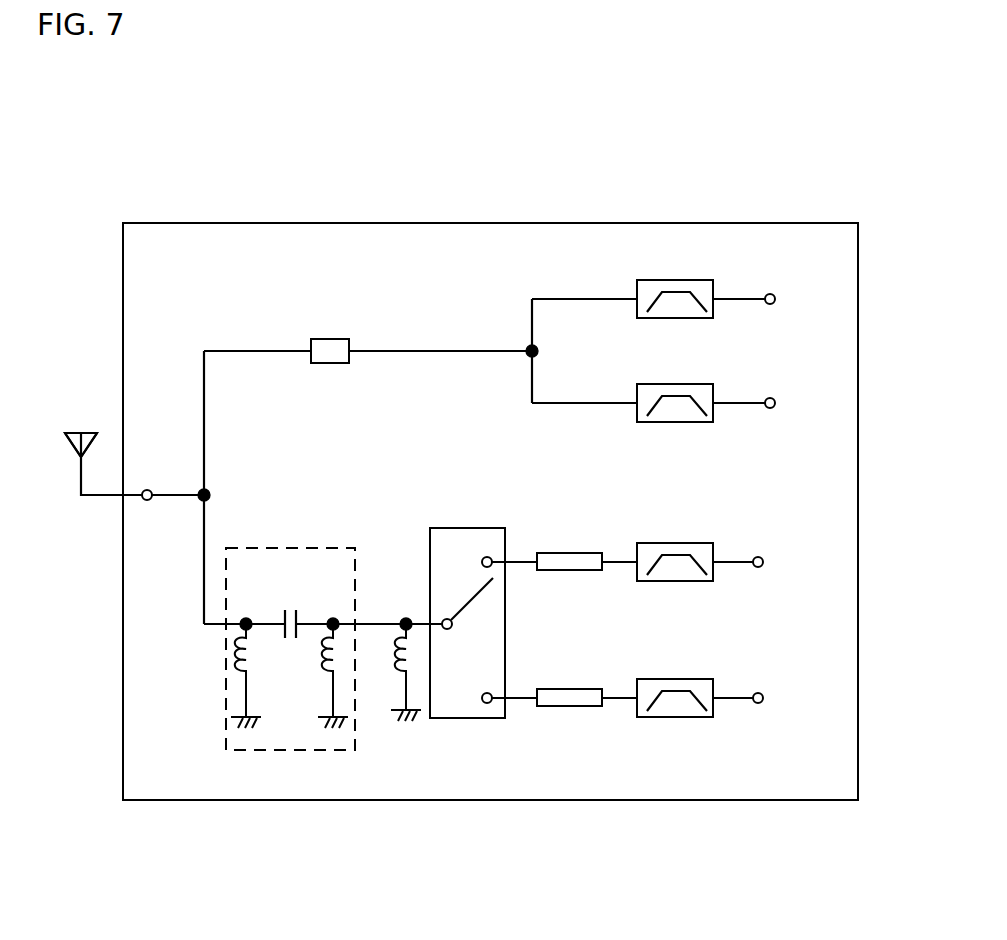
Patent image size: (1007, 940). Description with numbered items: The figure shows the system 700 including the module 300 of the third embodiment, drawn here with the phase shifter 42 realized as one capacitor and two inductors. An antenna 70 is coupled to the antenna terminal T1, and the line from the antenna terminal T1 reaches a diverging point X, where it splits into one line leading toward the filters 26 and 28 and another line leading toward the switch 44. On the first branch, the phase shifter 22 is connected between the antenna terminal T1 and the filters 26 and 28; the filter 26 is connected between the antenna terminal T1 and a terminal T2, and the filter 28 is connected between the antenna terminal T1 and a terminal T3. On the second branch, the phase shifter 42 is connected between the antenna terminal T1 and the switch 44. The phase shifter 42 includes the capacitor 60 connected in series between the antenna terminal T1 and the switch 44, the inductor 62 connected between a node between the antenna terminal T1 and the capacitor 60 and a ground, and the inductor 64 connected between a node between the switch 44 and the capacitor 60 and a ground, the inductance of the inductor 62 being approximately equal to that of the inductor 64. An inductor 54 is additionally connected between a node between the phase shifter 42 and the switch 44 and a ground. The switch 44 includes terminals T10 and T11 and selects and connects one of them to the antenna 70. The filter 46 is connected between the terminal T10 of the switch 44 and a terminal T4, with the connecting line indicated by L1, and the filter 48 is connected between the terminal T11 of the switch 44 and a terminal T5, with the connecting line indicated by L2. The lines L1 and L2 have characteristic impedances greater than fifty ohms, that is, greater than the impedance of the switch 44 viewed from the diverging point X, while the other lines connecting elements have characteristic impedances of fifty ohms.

The system 700 is at (773, 187).
The module 300 is at (545, 223).
The antenna 70 is at (88, 433).
The antenna terminal T1 is at (147, 490).
The diverging point X is at (210, 492).
The phase shifter 22 is at (340, 339).
The filter 26 is at (701, 280).
The filter 28 is at (701, 384).
The terminal T2 is at (776, 299).
The terminal T3 is at (776, 403).
The phase shifter 42 is at (337, 548).
The capacitor 60 is at (290, 609).
The inductor 62 is at (256, 655).
The inductor 64 is at (320, 661).
The inductor 54 is at (392, 670).
The switch 44 is at (483, 657).
The terminal T10 is at (497, 550).
The terminal T11 is at (497, 685).
The line L1 is at (566, 553).
The line L2 is at (566, 689).
The filter 46 is at (701, 543).
The filter 48 is at (701, 679).
The terminal T4 is at (764, 562).
The terminal T5 is at (764, 698).